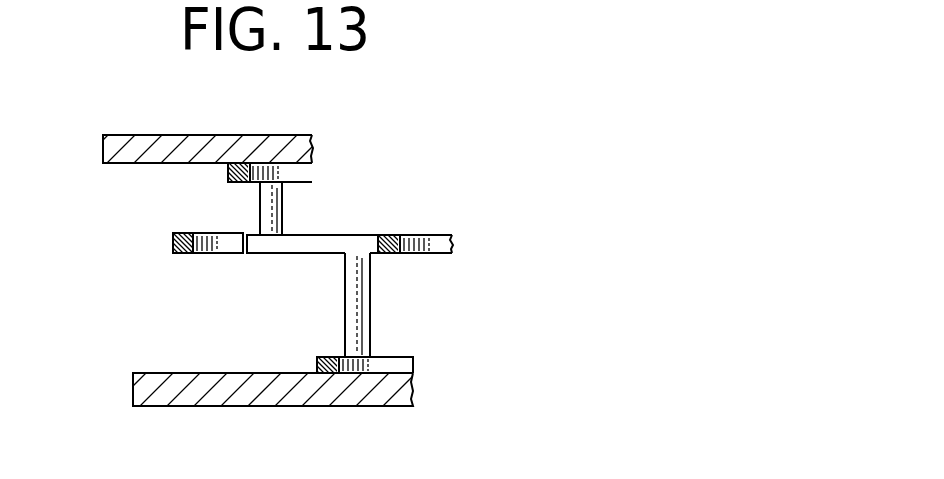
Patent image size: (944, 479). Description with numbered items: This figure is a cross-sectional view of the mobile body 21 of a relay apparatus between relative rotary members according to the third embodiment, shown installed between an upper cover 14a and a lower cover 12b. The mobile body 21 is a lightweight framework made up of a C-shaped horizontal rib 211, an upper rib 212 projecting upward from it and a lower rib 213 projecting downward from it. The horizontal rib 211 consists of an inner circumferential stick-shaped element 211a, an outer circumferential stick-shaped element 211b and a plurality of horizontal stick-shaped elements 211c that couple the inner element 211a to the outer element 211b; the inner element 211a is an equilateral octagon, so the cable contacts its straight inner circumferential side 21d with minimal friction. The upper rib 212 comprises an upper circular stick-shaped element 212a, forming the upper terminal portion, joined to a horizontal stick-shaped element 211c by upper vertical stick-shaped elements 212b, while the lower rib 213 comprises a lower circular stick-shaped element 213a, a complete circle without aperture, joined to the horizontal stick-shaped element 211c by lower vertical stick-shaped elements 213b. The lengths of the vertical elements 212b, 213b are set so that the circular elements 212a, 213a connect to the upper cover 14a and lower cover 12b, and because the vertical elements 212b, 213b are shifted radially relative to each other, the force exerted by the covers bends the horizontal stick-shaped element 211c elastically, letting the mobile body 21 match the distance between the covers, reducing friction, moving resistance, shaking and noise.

The upper cover 14a is at (190, 135).
The lower cover 12b is at (161, 373).
The mobile body 21 is at (447, 183).
The horizontal rib 211 is at (185, 232).
The inner circumferential stick-shaped element 211a is at (433, 234).
The outer circumferential stick-shaped element 211b is at (225, 233).
The horizontal stick-shaped element 211c is at (320, 235).
The inner circumferential side 21d is at (436, 250).
The upper rib 212 is at (285, 158).
The upper circular stick-shaped element 212a is at (302, 153).
The upper vertical stick-shaped element 212b is at (313, 226).
The lower rib 213 is at (353, 380).
The lower circular stick-shaped element 213a is at (412, 387).
The lower vertical stick-shaped element 213b is at (370, 312).